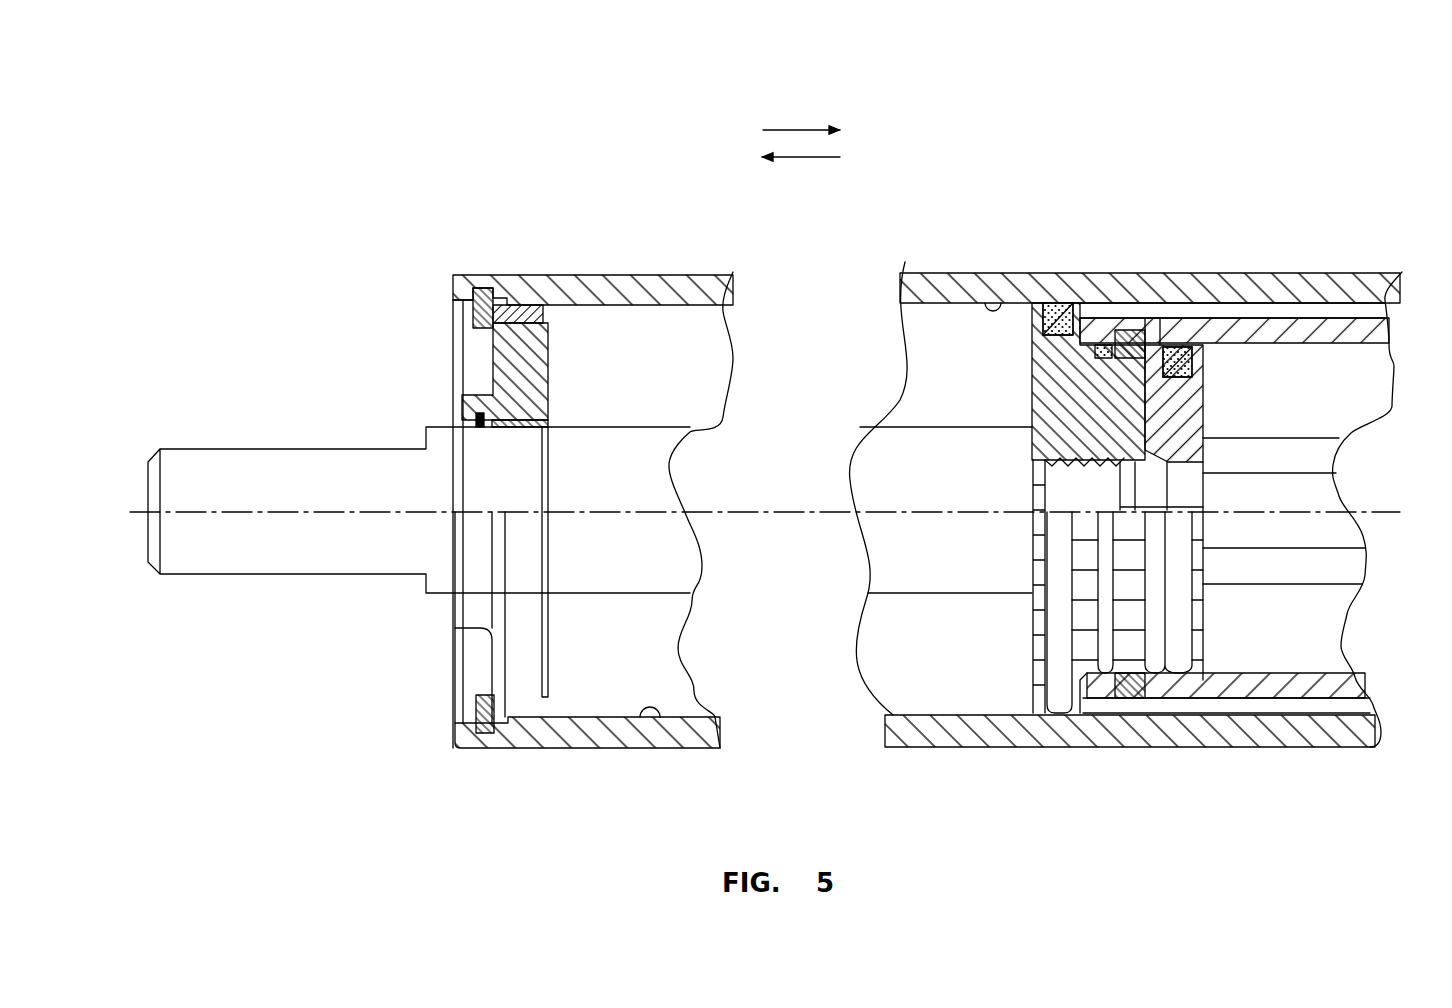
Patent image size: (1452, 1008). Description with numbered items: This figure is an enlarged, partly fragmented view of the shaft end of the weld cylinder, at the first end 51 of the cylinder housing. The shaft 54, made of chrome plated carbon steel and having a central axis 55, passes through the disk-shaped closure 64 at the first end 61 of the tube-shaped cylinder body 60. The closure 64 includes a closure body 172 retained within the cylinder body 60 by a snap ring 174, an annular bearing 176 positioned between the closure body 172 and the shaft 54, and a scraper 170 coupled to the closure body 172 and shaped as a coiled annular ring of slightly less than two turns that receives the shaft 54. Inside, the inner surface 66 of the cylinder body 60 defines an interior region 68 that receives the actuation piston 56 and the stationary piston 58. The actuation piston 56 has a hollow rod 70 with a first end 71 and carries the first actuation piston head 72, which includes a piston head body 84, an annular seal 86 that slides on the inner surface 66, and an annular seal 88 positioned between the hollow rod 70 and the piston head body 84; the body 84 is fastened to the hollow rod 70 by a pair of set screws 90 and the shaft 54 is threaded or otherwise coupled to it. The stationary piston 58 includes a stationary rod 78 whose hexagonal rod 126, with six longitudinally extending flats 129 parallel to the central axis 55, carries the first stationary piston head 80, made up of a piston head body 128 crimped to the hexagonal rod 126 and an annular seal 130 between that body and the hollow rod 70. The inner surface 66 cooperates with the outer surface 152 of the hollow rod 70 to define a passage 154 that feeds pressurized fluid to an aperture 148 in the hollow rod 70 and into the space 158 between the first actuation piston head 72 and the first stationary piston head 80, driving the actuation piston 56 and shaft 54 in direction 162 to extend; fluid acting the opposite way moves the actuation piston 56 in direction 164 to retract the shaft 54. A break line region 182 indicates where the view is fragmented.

The first end 51 is at (509, 790).
The shaft 54 is at (419, 576).
The central axis 55 is at (256, 500).
The actuation piston 56 is at (1020, 713).
The stationary piston 58 is at (1276, 368).
The cylinder body 60 is at (668, 292).
The first end 61 is at (462, 292).
The closure 64 is at (472, 669).
The inner surface 66 is at (659, 717).
The interior region 68 is at (962, 322).
The hollow rod 70 is at (1297, 717).
The first end 71 is at (1103, 720).
The first actuation piston head 72 is at (1020, 388).
The stationary rod 78 is at (1243, 588).
The first stationary piston head 80 is at (1215, 364).
The piston head body 84 is at (1055, 428).
The annular seal 86 is at (1050, 303).
The annular seal 88 is at (1094, 345).
The set screws 90 is at (1122, 343).
The hexagonal rod 126 is at (1303, 588).
The piston head body 128 is at (1196, 433).
The flats 129 is at (1305, 455).
The annular seal 130 is at (1186, 335).
The aperture 148 is at (1150, 305).
The outer surface 152 is at (1340, 312).
The passage 154 is at (1366, 312).
The space 158 is at (1153, 682).
The direction 162 is at (790, 157).
The direction 164 is at (797, 130).
The scraper 170 is at (470, 438).
The closure body 172 is at (548, 372).
The snap ring 174 is at (458, 317).
The annular bearing 176 is at (536, 434).
The break line region 182 is at (663, 428).